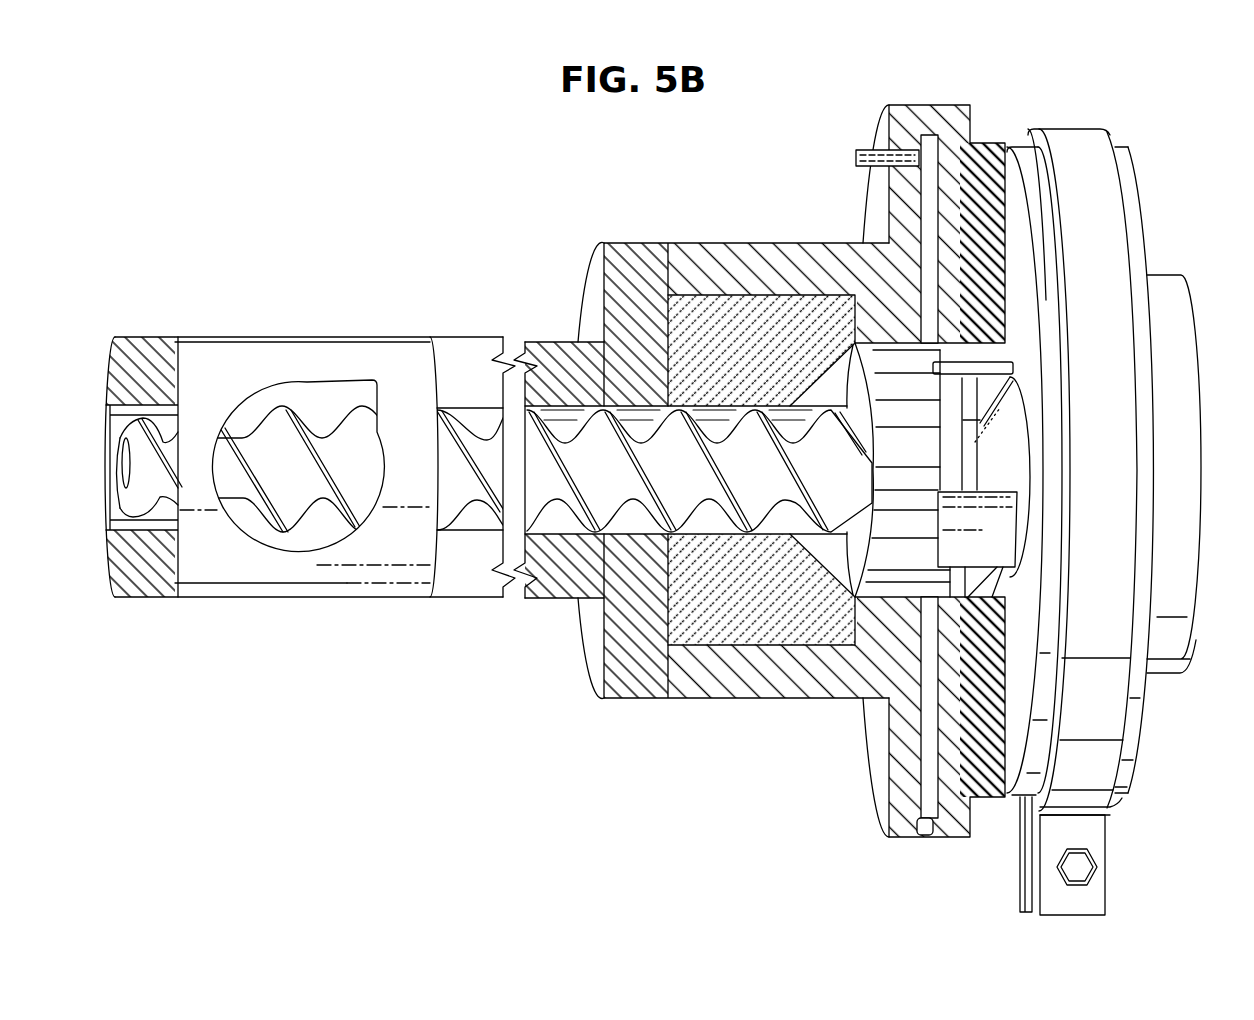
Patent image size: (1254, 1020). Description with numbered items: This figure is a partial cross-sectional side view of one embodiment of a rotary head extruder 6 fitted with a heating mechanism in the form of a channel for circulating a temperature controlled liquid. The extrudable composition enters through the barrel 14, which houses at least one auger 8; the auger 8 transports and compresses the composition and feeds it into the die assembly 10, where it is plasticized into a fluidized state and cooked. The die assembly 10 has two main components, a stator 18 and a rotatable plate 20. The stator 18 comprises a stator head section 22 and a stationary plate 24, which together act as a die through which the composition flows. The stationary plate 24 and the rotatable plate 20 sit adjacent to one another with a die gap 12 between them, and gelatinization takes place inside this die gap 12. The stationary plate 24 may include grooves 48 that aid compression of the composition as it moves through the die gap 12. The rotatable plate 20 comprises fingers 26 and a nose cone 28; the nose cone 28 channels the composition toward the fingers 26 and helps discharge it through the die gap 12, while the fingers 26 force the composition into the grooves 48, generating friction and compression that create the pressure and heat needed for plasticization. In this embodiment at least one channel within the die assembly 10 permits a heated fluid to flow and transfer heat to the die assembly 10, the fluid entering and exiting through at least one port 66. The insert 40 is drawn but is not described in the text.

The extruder 6 is at (338, 226).
The auger 8 is at (543, 492).
The die assembly 10 is at (802, 52).
The die gap 12 is at (1003, 816).
The barrel 14 is at (252, 358).
The stator 18 is at (1007, 93).
The rotatable plate 20 is at (1012, 172).
The stator head section 22 is at (780, 687).
The stationary plate 24 is at (943, 830).
The fingers 26 is at (1003, 337).
The nose cone 28 is at (917, 490).
The insert 40 is at (735, 345).
The grooves 48 is at (983, 505).
The port 66 is at (863, 148).